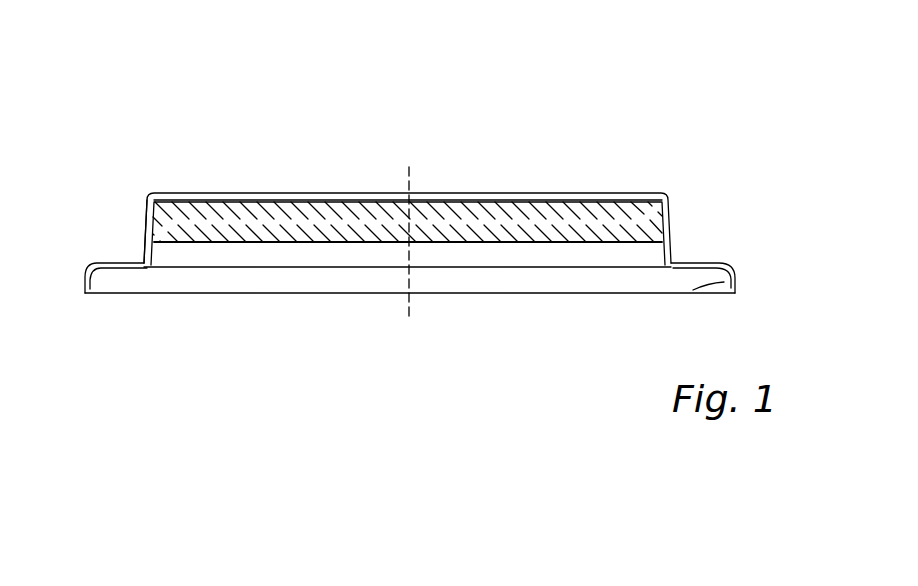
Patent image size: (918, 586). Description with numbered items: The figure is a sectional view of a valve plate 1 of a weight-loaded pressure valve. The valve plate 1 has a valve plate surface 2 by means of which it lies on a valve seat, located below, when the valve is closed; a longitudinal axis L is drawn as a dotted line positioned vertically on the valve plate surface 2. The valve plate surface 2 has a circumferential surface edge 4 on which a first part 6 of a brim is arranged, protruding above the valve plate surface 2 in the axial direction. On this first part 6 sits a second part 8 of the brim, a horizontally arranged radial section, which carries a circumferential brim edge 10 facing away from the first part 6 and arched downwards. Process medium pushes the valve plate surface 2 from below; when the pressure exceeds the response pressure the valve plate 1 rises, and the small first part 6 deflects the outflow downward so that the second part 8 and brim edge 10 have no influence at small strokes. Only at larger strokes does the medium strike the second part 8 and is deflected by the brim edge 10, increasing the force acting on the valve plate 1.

The valve plate 1 is at (533, 107).
The longitudinal axis L is at (408, 167).
The valve plate surface 2 is at (347, 243).
The circumferential surface edge 4 is at (672, 230).
The first part of the brim 6 is at (143, 247).
The second part of the brim 8 is at (127, 273).
The circumferential brim edge 10 is at (693, 290).